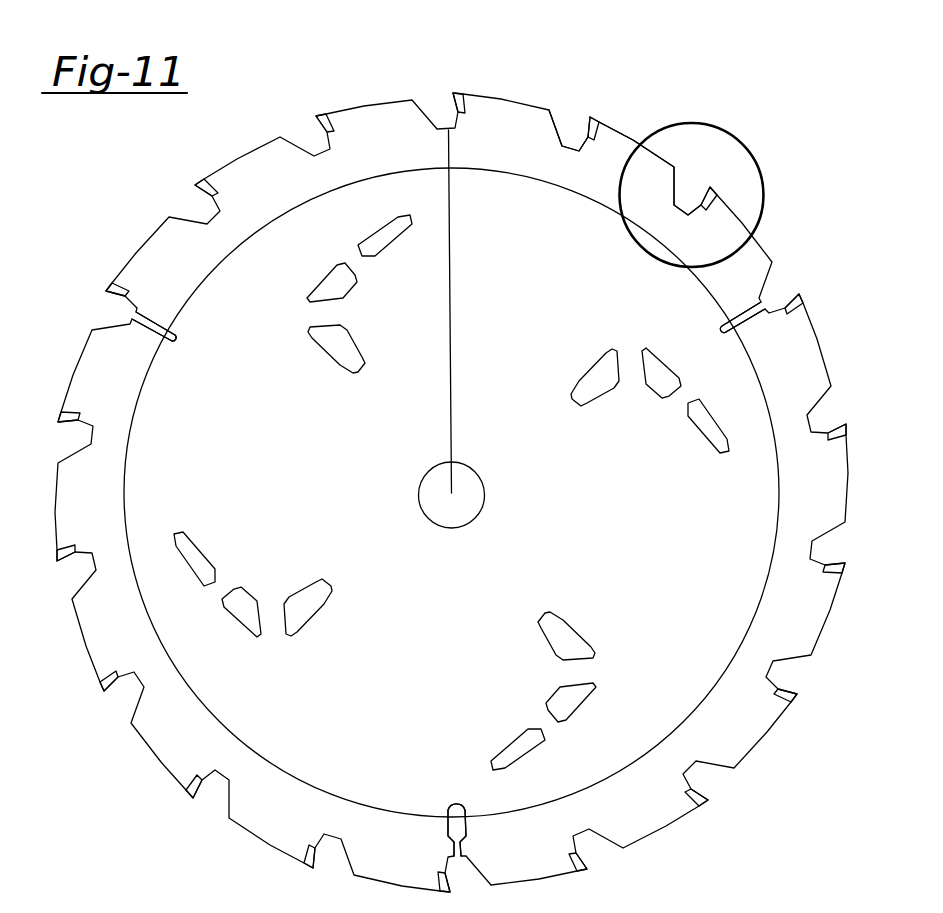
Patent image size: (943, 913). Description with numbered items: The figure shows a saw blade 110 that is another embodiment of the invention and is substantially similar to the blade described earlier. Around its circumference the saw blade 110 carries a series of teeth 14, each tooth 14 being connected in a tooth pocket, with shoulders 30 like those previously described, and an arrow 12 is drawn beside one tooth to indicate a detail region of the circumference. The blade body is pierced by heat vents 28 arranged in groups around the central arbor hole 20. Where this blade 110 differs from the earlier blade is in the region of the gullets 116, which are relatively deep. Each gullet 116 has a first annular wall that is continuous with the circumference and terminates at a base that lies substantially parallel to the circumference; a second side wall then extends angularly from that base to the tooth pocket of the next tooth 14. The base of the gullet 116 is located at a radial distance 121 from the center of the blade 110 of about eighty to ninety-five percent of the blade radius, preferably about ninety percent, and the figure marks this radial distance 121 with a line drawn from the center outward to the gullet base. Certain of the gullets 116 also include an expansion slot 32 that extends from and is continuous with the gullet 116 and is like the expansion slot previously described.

The saw blade 110 is at (92, 745).
The tooth 14 is at (585, 106).
The gullet 116 is at (563, 110).
The shoulder 30 is at (638, 123).
The direction of rotation 12 is at (683, 128).
The radial distance 121 is at (450, 315).
The arbor hole 20 is at (478, 473).
The heat vent 28 is at (600, 386).
The expansion slot 32 is at (177, 340).